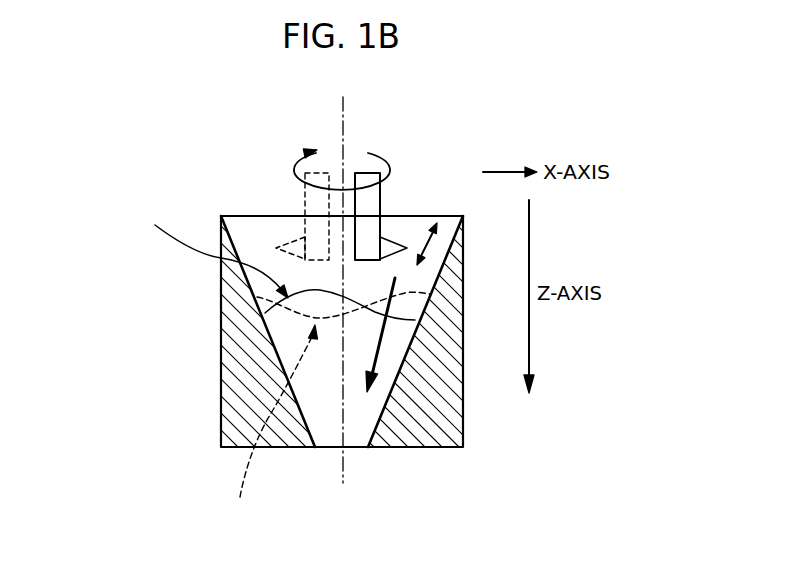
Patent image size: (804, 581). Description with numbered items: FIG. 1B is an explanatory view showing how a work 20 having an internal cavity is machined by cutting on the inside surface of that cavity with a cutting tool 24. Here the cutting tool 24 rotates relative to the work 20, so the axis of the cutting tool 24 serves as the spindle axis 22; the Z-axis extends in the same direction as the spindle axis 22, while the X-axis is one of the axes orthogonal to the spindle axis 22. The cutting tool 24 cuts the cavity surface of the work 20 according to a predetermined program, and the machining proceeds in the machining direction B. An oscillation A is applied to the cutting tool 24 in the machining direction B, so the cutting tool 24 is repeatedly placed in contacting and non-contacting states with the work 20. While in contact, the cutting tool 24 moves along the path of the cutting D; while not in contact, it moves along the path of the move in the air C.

The work 20 is at (221, 375).
The spindle axis 22 is at (342, 276).
The cutting tool 24 is at (380, 190).
The oscillation A is at (417, 246).
The machining direction B is at (382, 342).
The move in the air C is at (327, 422).
The cutting D is at (192, 249).